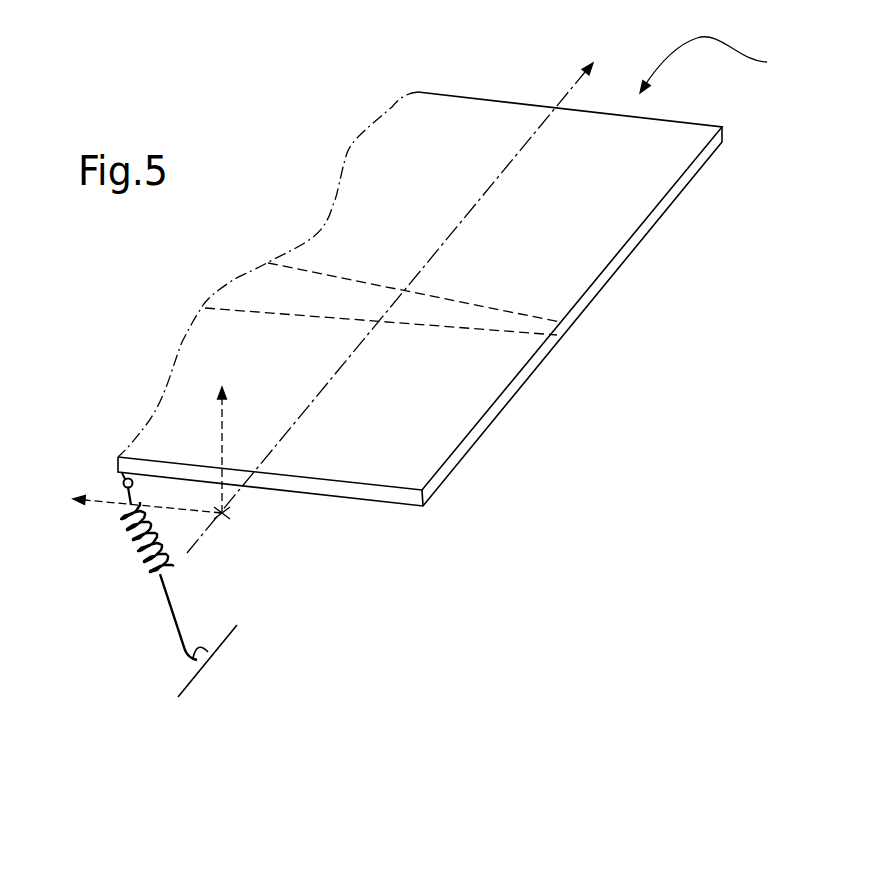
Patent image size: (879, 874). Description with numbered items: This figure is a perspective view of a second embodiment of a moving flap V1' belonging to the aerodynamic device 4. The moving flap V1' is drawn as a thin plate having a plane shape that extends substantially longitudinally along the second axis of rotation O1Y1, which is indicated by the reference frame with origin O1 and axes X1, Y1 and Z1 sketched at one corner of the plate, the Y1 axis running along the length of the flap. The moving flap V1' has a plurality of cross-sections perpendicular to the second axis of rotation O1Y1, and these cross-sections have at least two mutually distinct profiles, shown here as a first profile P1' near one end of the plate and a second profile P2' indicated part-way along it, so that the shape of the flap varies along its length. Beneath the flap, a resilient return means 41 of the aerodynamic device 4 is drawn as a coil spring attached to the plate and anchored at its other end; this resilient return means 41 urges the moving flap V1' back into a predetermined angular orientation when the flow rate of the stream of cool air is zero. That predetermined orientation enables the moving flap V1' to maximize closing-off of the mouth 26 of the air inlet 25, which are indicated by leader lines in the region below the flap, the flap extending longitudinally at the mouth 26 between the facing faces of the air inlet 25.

The aerodynamic device 4 is at (557, 450).
The resilient return means 41 is at (140, 553).
The air inlet 25 is at (495, 620).
The mouth 26 is at (287, 623).
The X1 axis X1 is at (129, 505).
The Y1 axis Y1 is at (400, 291).
The Z1 axis Z1 is at (222, 432).
The origin O1 is at (240, 530).
The first profile P1' is at (430, 554).
The second profile P2' is at (602, 330).
The moving flap V1' is at (726, 65).